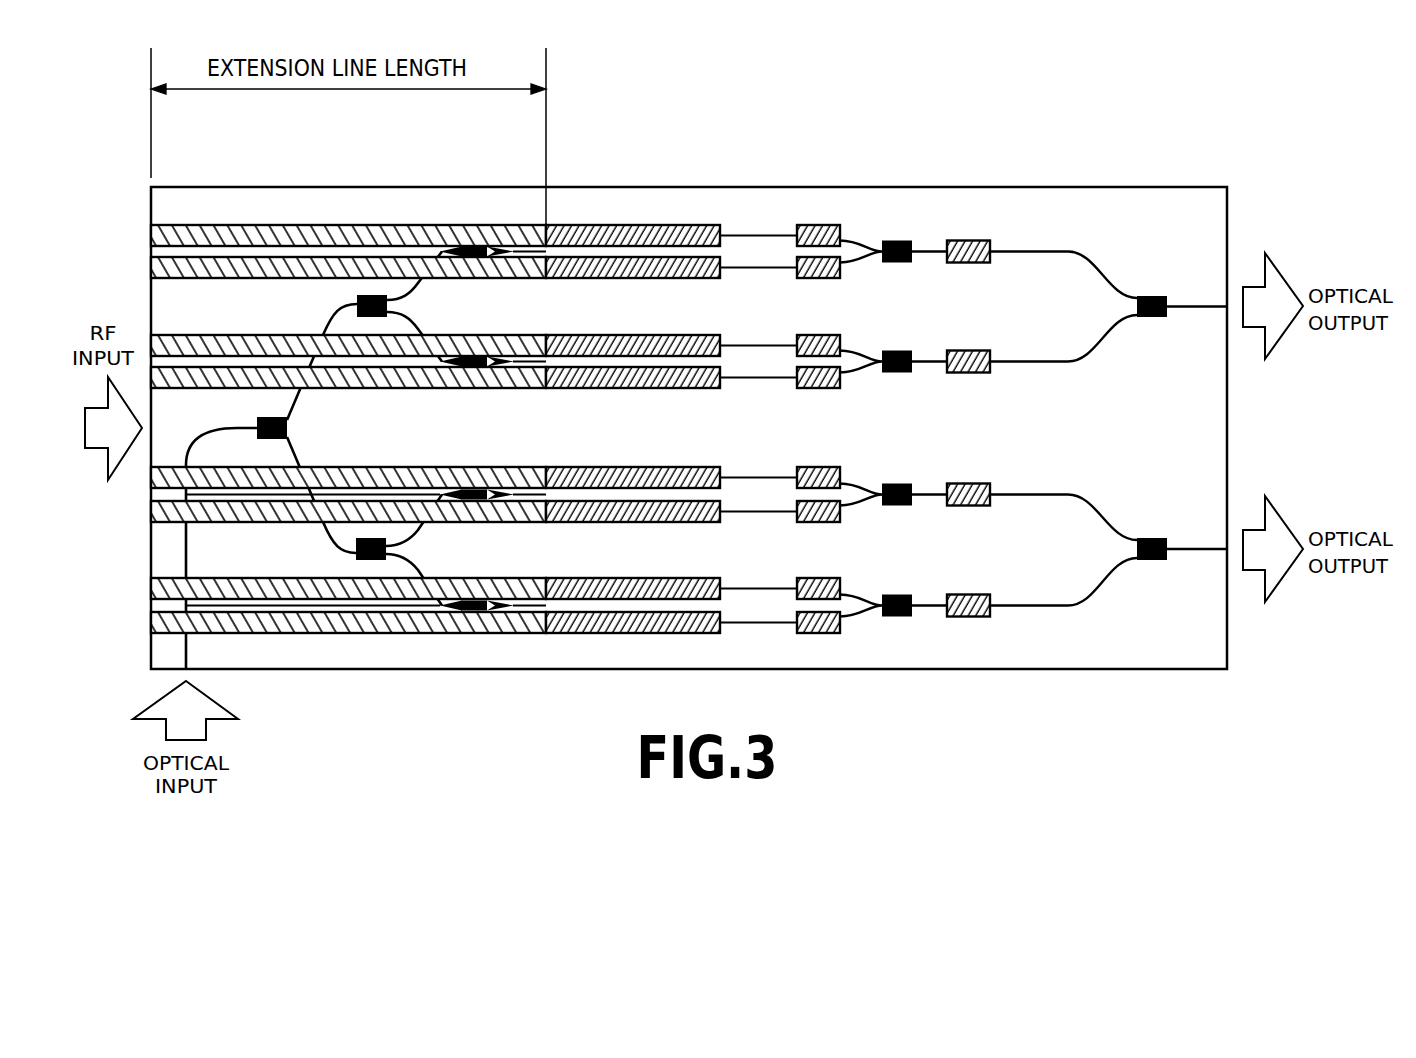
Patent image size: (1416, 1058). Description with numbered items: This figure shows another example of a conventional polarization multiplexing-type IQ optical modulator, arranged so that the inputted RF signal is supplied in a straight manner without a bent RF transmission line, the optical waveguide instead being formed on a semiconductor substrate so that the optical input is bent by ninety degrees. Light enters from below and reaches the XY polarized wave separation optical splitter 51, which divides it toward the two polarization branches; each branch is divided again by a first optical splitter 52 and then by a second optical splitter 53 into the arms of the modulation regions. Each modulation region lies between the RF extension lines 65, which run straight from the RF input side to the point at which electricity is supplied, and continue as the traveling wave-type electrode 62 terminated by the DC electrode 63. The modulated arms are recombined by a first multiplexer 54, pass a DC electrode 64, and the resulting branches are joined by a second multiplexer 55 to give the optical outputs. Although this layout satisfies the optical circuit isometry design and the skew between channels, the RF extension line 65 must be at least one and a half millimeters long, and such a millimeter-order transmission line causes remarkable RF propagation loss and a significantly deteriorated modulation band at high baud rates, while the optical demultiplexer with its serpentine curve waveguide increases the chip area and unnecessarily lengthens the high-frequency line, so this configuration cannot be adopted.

The XY polarized wave separation optical splitter 51 is at (269, 425).
The first optical splitter 52 is at (371, 295).
The second optical splitter 53 is at (474, 248).
The first multiplexer 54 is at (898, 243).
The second multiplexer 55 is at (1150, 300).
The traveling wave-type electrode 62 is at (627, 231).
The DC electrode 63 is at (818, 233).
The DC electrode 64 is at (968, 243).
The RF extension line 65 is at (258, 233).